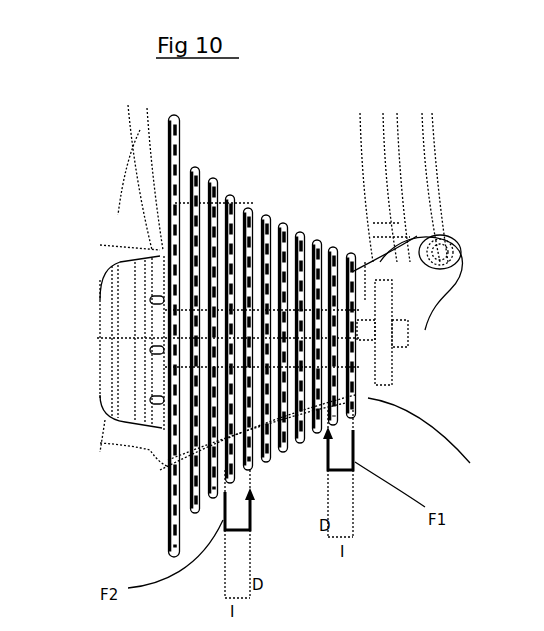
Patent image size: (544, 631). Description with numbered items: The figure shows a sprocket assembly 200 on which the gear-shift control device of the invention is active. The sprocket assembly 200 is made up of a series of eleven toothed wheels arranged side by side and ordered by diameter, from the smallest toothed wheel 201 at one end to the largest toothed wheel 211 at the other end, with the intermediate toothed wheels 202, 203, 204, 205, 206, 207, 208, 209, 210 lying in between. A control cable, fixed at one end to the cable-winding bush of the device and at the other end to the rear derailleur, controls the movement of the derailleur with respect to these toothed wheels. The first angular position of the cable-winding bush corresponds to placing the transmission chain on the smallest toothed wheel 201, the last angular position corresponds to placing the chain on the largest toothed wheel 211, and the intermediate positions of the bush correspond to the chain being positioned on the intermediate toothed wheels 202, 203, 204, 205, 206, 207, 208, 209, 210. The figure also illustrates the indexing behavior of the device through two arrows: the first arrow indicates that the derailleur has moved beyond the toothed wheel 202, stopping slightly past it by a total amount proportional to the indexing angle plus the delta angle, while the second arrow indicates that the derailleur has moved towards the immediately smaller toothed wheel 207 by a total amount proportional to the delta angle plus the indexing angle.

The sprocket assembly 200 is at (435, 445).
The smallest toothed wheel 201 is at (352, 270).
The intermediate toothed wheel 202 is at (336, 250).
The intermediate toothed wheel 203 is at (318, 242).
The intermediate toothed wheel 204 is at (301, 233).
The intermediate toothed wheel 205 is at (284, 222).
The intermediate toothed wheel 206 is at (266, 215).
The intermediate toothed wheel 207 is at (249, 207).
The intermediate toothed wheel 208 is at (231, 195).
The intermediate toothed wheel 209 is at (214, 198).
The intermediate toothed wheel 210 is at (196, 180).
The largest toothed wheel 211 is at (172, 123).